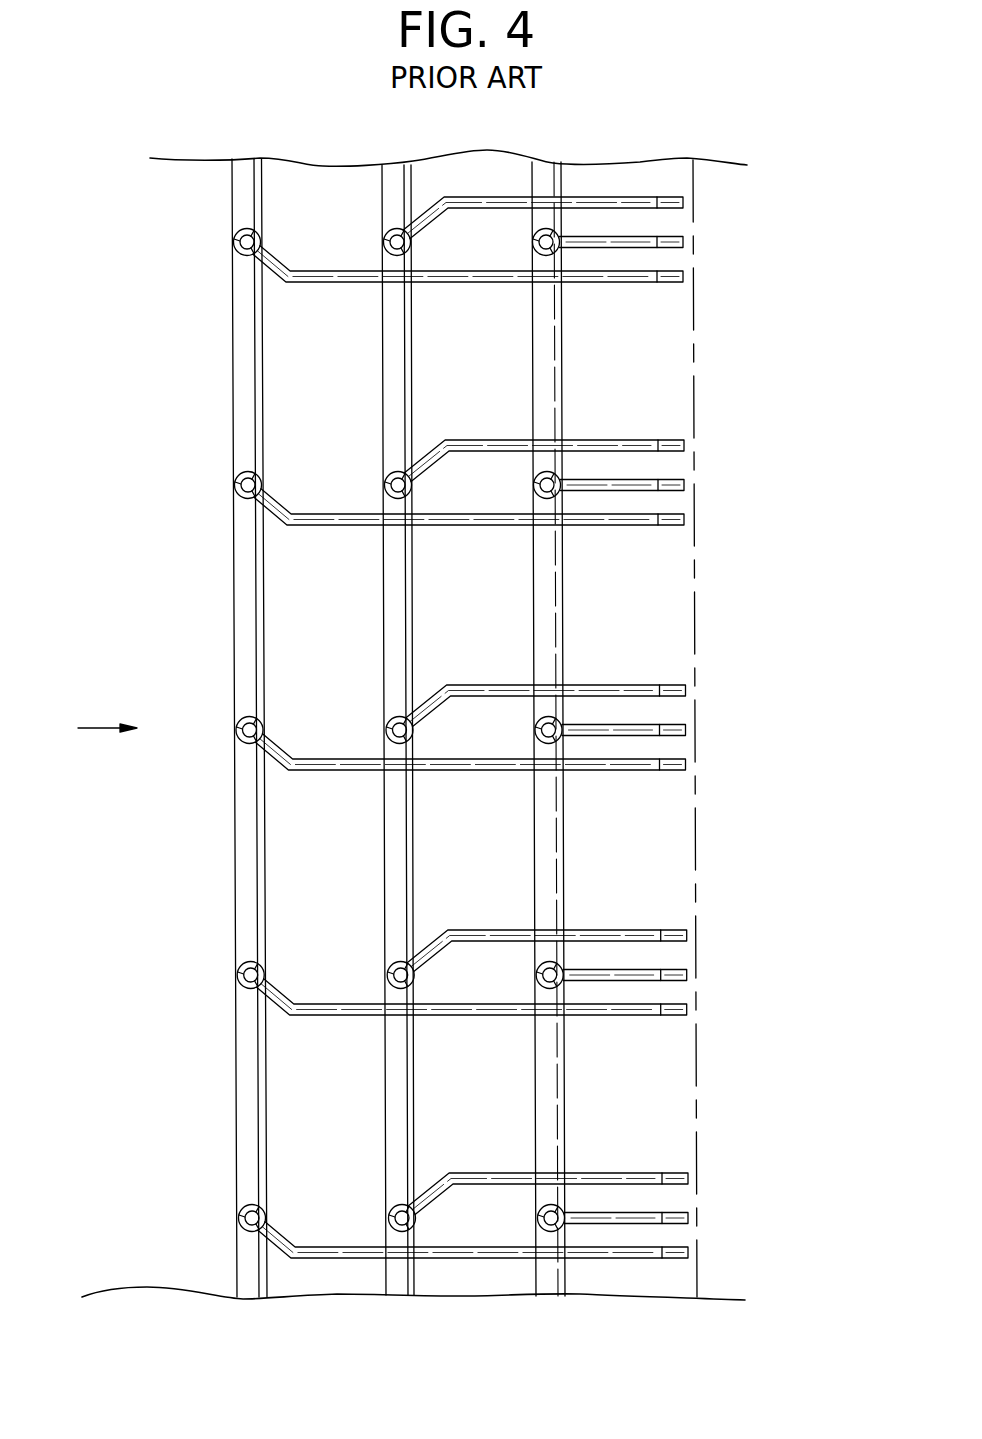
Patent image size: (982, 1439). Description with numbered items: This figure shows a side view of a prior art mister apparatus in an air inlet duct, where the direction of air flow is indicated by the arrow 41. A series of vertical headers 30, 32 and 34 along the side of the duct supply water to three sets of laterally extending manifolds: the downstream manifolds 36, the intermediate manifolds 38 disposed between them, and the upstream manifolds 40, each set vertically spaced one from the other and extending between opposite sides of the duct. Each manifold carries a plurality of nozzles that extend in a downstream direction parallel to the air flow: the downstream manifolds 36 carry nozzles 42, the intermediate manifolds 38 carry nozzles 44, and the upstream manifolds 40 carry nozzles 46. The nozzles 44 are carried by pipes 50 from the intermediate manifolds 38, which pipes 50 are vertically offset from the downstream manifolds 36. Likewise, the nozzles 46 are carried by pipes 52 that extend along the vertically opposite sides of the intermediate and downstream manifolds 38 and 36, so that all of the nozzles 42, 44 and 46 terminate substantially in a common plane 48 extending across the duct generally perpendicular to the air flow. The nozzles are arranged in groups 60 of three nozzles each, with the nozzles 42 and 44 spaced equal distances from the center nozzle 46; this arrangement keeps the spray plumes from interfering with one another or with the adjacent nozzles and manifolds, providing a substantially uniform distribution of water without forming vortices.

The header 30 is at (532, 622).
The header 32 is at (382, 592).
The header 34 is at (245, 627).
The downstream manifold 36 is at (571, 768).
The intermediate manifold 38 is at (457, 774).
The upstream manifold 40 is at (233, 757).
The air flow arrow 41 is at (96, 733).
The nozzle 42 is at (661, 982).
The nozzle 44 is at (696, 664).
The nozzle 46 is at (711, 776).
The common plane 48 is at (693, 310).
The pipe 50 is at (456, 196).
The pipe 52 is at (292, 283).
The group of nozzles 60 is at (664, 1215).